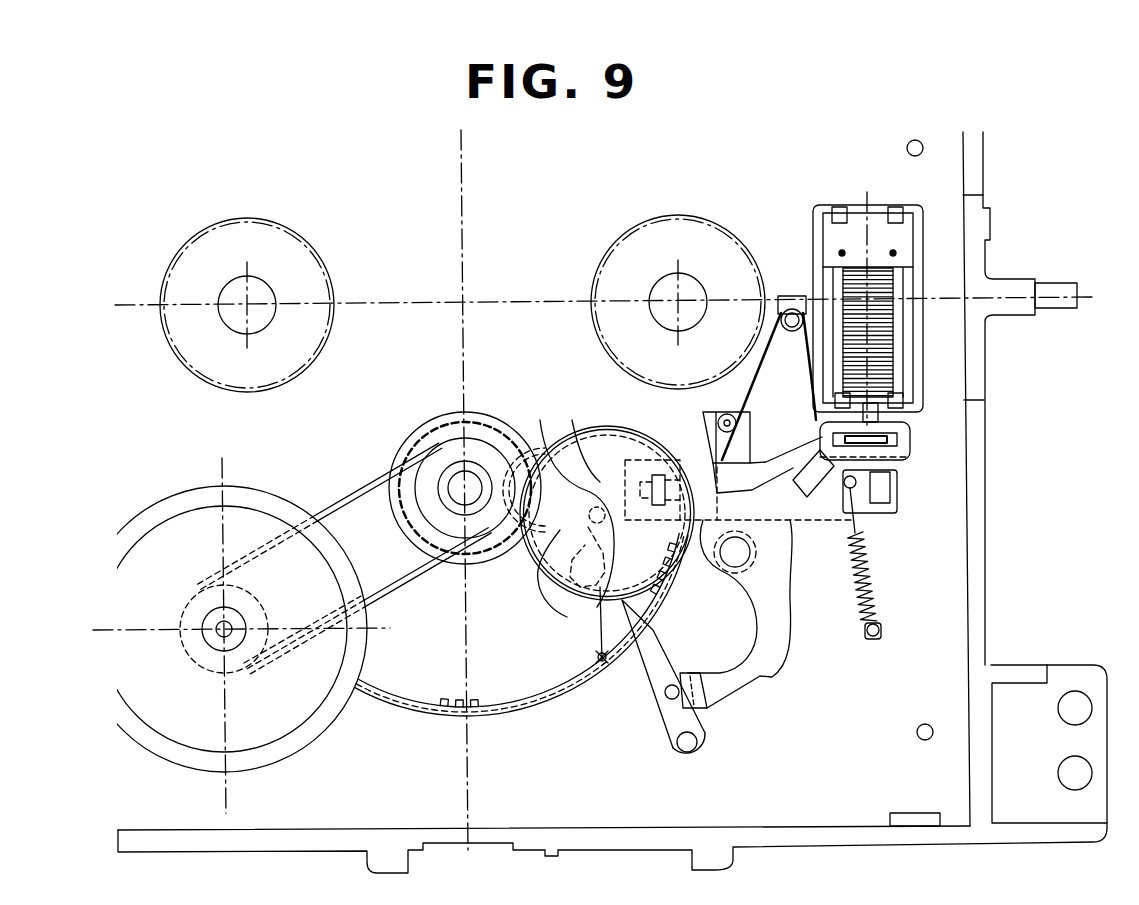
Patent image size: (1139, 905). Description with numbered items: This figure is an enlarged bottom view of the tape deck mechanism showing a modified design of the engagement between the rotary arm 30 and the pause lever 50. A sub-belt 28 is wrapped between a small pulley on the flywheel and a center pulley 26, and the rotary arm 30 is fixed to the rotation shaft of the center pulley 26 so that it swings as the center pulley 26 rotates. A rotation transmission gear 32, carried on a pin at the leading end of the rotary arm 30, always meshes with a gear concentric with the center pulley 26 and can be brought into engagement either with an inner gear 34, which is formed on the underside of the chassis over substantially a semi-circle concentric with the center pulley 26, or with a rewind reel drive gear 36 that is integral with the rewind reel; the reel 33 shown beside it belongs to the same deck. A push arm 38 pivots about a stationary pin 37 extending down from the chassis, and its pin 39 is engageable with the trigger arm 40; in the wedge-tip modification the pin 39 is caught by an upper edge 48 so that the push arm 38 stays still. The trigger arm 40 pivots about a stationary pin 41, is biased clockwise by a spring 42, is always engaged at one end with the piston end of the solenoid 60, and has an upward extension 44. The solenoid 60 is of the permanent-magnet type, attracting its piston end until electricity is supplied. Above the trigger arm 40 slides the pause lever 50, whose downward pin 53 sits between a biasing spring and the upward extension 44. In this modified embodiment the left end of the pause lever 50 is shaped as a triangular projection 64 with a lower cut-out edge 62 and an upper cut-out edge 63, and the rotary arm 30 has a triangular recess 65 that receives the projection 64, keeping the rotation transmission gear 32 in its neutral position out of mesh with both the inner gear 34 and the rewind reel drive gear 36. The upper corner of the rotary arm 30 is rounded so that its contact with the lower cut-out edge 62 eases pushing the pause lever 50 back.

The center pulley 26 is at (452, 430).
The sub-belt 28 is at (347, 480).
The rotary arm 30 is at (543, 593).
The rotation transmission gear 32 is at (548, 448).
The reel 33 is at (180, 285).
The inner gear 34 is at (413, 700).
The rewind reel drive gear 36 is at (618, 282).
The stationary pin 37 is at (687, 752).
The push arm 38 is at (585, 622).
The pin 39 is at (653, 720).
The trigger arm 40 is at (757, 672).
The stationary pin 41 is at (735, 553).
The spring 42 is at (880, 588).
The upward extension 44 is at (700, 440).
The upper edge 48 is at (725, 703).
The pause lever 50 is at (895, 496).
The downward pin 53 is at (750, 423).
The solenoid 60 is at (833, 263).
The lower cut-out edge 62 is at (623, 618).
The upper cut-out edge 63 is at (588, 432).
The triangular projection 64 is at (630, 452).
The triangular recess 65 is at (575, 445).